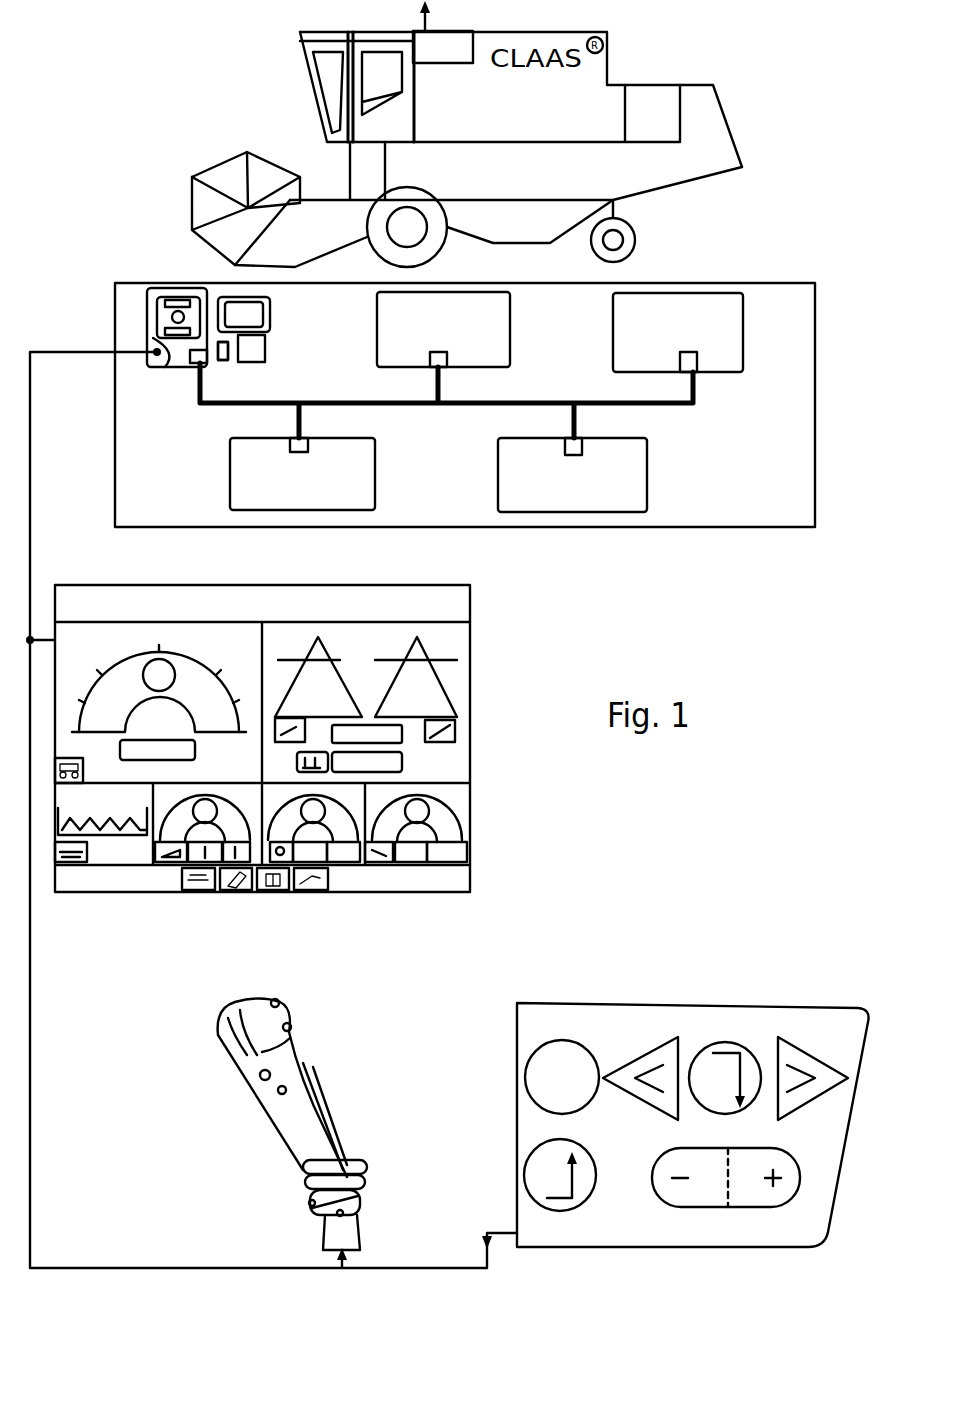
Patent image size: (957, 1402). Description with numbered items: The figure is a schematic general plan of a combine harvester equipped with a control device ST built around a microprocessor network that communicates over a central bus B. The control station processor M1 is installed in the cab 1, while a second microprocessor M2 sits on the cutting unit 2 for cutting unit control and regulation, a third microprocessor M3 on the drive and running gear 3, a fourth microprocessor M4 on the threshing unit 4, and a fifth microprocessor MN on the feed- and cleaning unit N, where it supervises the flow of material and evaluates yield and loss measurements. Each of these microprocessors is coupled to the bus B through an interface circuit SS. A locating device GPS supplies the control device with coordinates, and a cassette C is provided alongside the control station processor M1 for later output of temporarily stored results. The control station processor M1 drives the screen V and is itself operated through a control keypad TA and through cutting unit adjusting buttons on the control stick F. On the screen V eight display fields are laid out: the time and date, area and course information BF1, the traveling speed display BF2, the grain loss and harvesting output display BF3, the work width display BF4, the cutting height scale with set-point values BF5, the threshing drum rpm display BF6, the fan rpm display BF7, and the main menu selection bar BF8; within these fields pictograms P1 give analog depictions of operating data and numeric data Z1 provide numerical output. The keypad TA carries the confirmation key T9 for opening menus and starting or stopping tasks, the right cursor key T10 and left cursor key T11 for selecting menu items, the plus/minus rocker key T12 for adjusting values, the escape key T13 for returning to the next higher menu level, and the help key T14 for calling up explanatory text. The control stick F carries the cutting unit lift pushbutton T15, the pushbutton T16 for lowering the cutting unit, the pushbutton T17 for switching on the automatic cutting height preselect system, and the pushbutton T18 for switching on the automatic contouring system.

The cab 1 is at (197, 283).
The cutting unit 2 is at (357, 438).
The drive and running gear 3 is at (457, 292).
The threshing unit 4 is at (622, 438).
The feed- and cleaning unit N is at (683, 293).
The locating device GPS is at (443, 47).
The cassette C is at (167, 367).
The screen V is at (253, 310).
The control keypad TA is at (813, 1213).
The control station processor M1 is at (268, 362).
The interface circuit SS is at (208, 364).
The control stick F is at (307, 1155).
The bus B is at (213, 408).
The second microprocessor M2 is at (302, 474).
The third microprocessor M3 is at (443, 329).
The fourth microprocessor M4 is at (572, 475).
The fifth microprocessor MN is at (678, 332).
The control device ST is at (465, 405).
The numeric data Z1 is at (98, 600).
The pictograms P1 is at (173, 650).
The time and date display and area and course information BF1 is at (256, 620).
The traveling speed display BF2 is at (248, 654).
The grain loss- and harvesting output display BF3 is at (388, 655).
The work width display BF4 is at (133, 850).
The cutting height setting unit scale BF5 is at (228, 867).
The threshing drum rpm display BF6 is at (337, 833).
The fan rpm display BF7 is at (412, 833).
The selection bar for the main menu BF8 is at (381, 881).
The confirmation key T9 is at (727, 1052).
The cursor key right T10 is at (806, 1058).
The cursor key left T11 is at (657, 1060).
The +/− rocker key T12 is at (740, 1193).
The escape key T13 is at (580, 1190).
The help key T14 is at (580, 1064).
The cutting unit lift pushbutton T15 is at (280, 1002).
The pushbutton for lowering the cutting unit T16 is at (292, 1027).
The pushbutton for turning on the automatic cutting height preselect system T17 is at (259, 1076).
The pushbutton for turning on the automatic contouring system T18 is at (277, 1092).